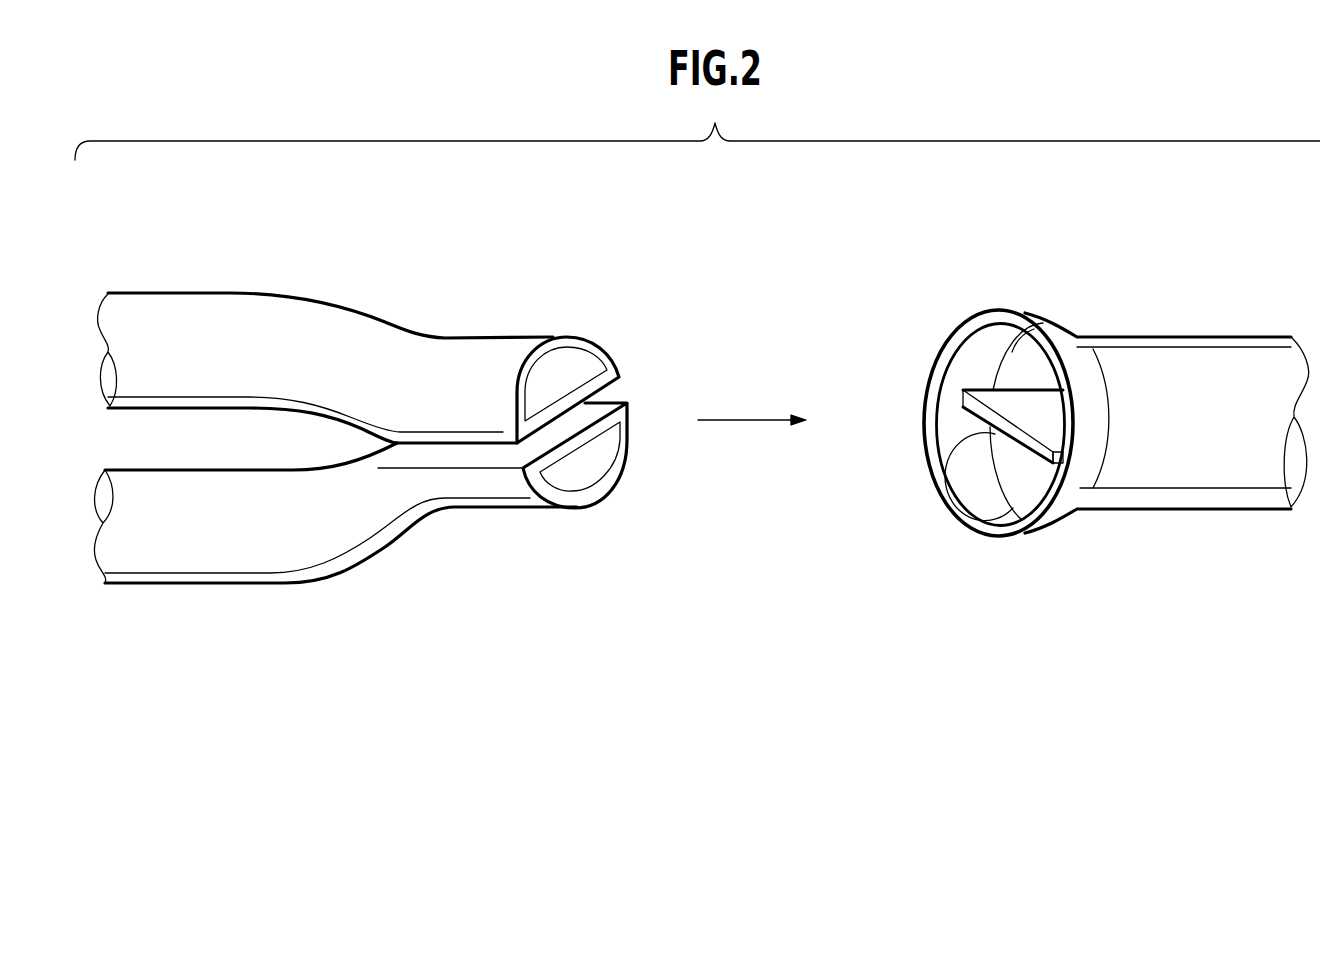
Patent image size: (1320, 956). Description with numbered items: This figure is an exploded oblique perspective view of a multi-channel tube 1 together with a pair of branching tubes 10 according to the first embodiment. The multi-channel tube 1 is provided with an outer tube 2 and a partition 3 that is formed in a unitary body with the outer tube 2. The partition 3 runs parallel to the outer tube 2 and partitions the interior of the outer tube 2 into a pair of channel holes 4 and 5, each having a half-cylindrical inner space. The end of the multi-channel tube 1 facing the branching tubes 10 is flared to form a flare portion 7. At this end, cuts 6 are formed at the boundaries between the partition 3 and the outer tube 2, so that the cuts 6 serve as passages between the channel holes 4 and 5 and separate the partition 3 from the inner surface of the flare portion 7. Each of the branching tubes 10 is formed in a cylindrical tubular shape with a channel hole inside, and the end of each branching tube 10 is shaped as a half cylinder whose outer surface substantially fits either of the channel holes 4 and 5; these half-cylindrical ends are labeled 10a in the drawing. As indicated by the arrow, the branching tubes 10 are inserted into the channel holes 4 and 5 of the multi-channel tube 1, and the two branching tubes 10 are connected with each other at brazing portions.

The multi-channel tube 1 is at (1211, 330).
The outer tube 2 is at (1219, 488).
The partition 3 is at (948, 485).
The channel hole 4 is at (1032, 357).
The channel hole 5 is at (1040, 485).
The cuts 6 is at (1000, 432).
The flare portion 7 is at (1073, 357).
The branching tubes 10 is at (268, 305).
The end portions of branch tubes 10a is at (572, 363).